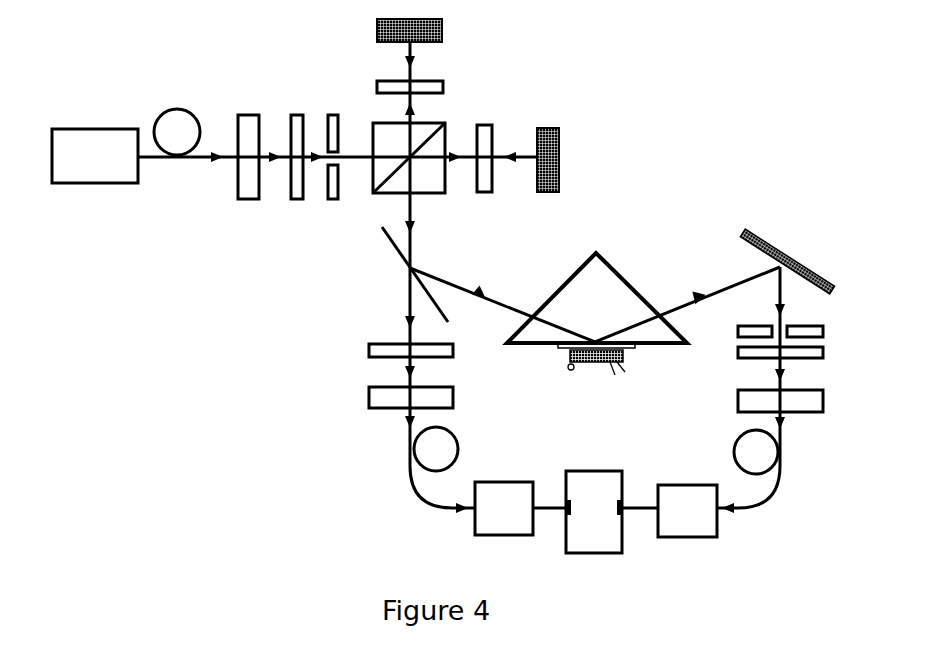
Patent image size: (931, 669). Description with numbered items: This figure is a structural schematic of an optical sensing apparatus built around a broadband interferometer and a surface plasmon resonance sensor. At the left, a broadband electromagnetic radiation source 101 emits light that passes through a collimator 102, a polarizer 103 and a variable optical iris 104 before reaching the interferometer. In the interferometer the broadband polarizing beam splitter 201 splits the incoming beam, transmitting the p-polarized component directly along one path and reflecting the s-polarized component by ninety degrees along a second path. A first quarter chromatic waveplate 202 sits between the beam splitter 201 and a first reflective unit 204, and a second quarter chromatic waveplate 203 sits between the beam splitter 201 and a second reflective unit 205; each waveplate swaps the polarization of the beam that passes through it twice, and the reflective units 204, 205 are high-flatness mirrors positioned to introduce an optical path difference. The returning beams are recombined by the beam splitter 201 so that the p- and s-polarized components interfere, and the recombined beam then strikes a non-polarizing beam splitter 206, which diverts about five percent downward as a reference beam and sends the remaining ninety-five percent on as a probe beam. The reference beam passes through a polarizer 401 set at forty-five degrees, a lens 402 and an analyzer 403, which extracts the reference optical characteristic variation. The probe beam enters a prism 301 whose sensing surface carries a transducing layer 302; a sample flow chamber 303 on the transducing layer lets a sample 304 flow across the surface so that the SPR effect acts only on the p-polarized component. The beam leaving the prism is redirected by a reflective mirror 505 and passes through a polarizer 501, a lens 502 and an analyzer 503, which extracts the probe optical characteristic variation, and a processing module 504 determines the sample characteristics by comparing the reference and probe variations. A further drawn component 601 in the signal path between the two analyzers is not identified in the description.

The broadband electromagnetic radiation source 101 is at (121, 137).
The collimator 102 is at (250, 122).
The polarizer 103 is at (297, 120).
The variable optical iris 104 is at (333, 120).
The broadband polarizing beam splitter 201 is at (386, 133).
The first quarter chromatic waveplate 202 is at (379, 84).
The second quarter chromatic waveplate 203 is at (485, 136).
The first reflective unit 204 is at (382, 21).
The second reflective unit 205 is at (549, 136).
The non-polarizing beam splitter 206 is at (385, 226).
The prism 301 is at (583, 280).
The transducing layer 302 is at (637, 347).
The sample flow chamber 303 is at (568, 365).
The sample 304 is at (609, 380).
The polarizer 401 is at (378, 346).
The lens 402 is at (382, 395).
The analyzer 403 is at (520, 490).
The polarizer 501 is at (752, 232).
The lens 502 is at (768, 328).
The analyzer 503 is at (830, 372).
The processing module 504 is at (750, 400).
The reflective mirror 505 is at (705, 493).
The signal processing unit 601 is at (610, 478).